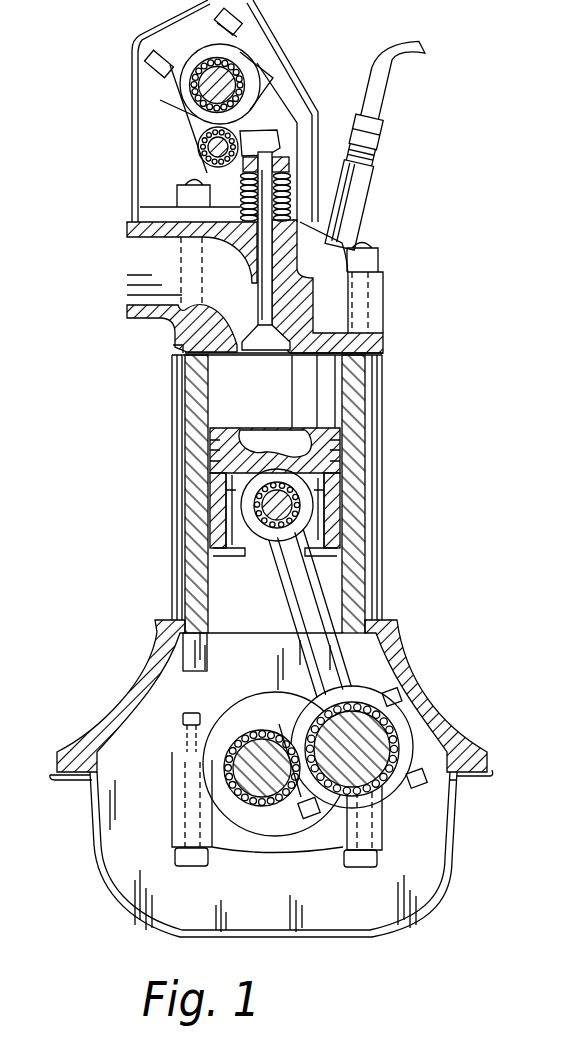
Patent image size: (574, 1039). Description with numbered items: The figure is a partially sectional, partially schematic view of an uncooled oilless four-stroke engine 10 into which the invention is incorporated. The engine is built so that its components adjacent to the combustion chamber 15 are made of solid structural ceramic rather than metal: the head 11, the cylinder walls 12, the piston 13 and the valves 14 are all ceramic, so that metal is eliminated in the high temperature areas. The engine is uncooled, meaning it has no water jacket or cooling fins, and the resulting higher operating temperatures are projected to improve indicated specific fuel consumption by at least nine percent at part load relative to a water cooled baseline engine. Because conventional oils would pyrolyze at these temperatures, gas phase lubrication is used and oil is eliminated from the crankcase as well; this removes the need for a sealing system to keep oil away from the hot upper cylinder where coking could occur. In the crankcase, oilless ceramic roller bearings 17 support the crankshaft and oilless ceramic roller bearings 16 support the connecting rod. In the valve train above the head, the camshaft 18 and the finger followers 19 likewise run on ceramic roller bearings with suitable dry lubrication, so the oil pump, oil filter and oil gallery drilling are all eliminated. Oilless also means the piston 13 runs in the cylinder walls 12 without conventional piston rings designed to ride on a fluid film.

The uncooled oilless four-stroke engine 10 is at (282, 468).
The head 11 is at (180, 312).
The cylinder walls 12 is at (197, 423).
The piston 13 is at (313, 522).
The valves 14 is at (266, 311).
The combustion chamber 15 is at (240, 380).
The ceramic roller bearings for the connecting rod 16 is at (268, 545).
The ceramic roller bearings for the crankshaft 17 is at (407, 722).
The camshaft 18 is at (177, 46).
The valve train finger followers 19 is at (180, 165).